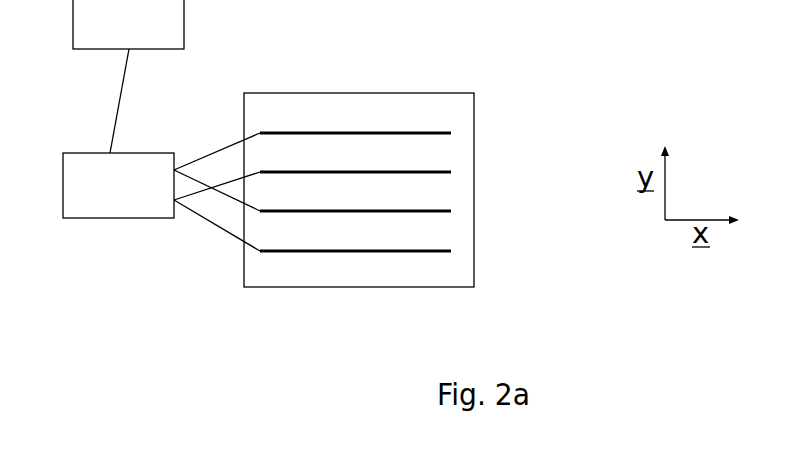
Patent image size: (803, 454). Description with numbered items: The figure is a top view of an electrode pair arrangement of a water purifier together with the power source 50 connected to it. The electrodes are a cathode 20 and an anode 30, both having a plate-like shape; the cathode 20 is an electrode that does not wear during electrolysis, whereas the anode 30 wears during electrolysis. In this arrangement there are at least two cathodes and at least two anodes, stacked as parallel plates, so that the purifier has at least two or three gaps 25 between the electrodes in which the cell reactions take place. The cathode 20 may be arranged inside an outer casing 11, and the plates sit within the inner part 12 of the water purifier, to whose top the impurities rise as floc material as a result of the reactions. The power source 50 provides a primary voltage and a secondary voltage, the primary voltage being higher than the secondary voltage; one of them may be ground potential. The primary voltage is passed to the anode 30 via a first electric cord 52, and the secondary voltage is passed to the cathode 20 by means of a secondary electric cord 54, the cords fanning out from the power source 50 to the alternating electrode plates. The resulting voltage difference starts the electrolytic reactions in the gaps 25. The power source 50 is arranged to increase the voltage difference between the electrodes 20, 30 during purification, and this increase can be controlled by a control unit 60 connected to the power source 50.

The control unit 60 is at (100, 32).
The power source 50 is at (91, 196).
The secondary electric cord 54 is at (205, 157).
The first electric cord 52 is at (190, 210).
The outer casing 11 is at (360, 93).
The inner part 12 is at (332, 124).
The gap 25 is at (336, 160).
The cathode 20 is at (451, 133).
The anode 30 is at (451, 172).